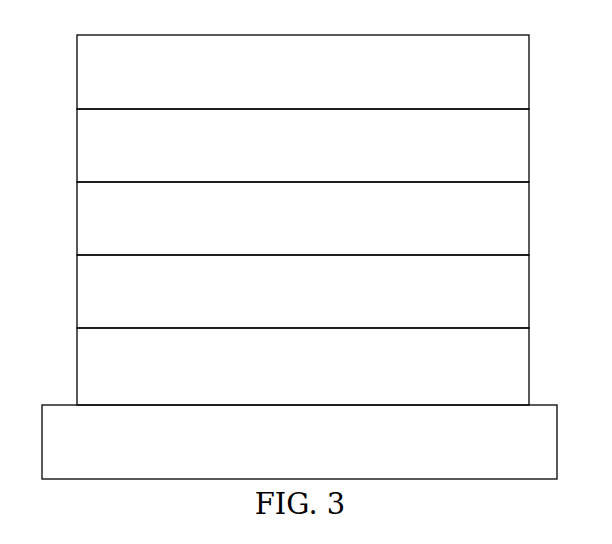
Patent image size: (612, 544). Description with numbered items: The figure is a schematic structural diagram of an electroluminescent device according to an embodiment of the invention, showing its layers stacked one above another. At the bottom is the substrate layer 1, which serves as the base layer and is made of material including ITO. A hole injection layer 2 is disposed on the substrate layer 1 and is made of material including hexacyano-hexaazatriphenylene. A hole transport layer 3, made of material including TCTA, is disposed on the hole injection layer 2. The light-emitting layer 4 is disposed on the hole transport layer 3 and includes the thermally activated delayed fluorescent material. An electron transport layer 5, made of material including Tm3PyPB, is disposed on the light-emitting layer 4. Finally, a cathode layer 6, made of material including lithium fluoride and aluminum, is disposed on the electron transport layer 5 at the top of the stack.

The substrate layer 1 is at (299, 442).
The hole injection layer 2 is at (303, 366).
The hole transport layer 3 is at (303, 291).
The light-emitting layer 4 is at (303, 218).
The electron transport layer 5 is at (303, 145).
The cathode layer 6 is at (303, 72).